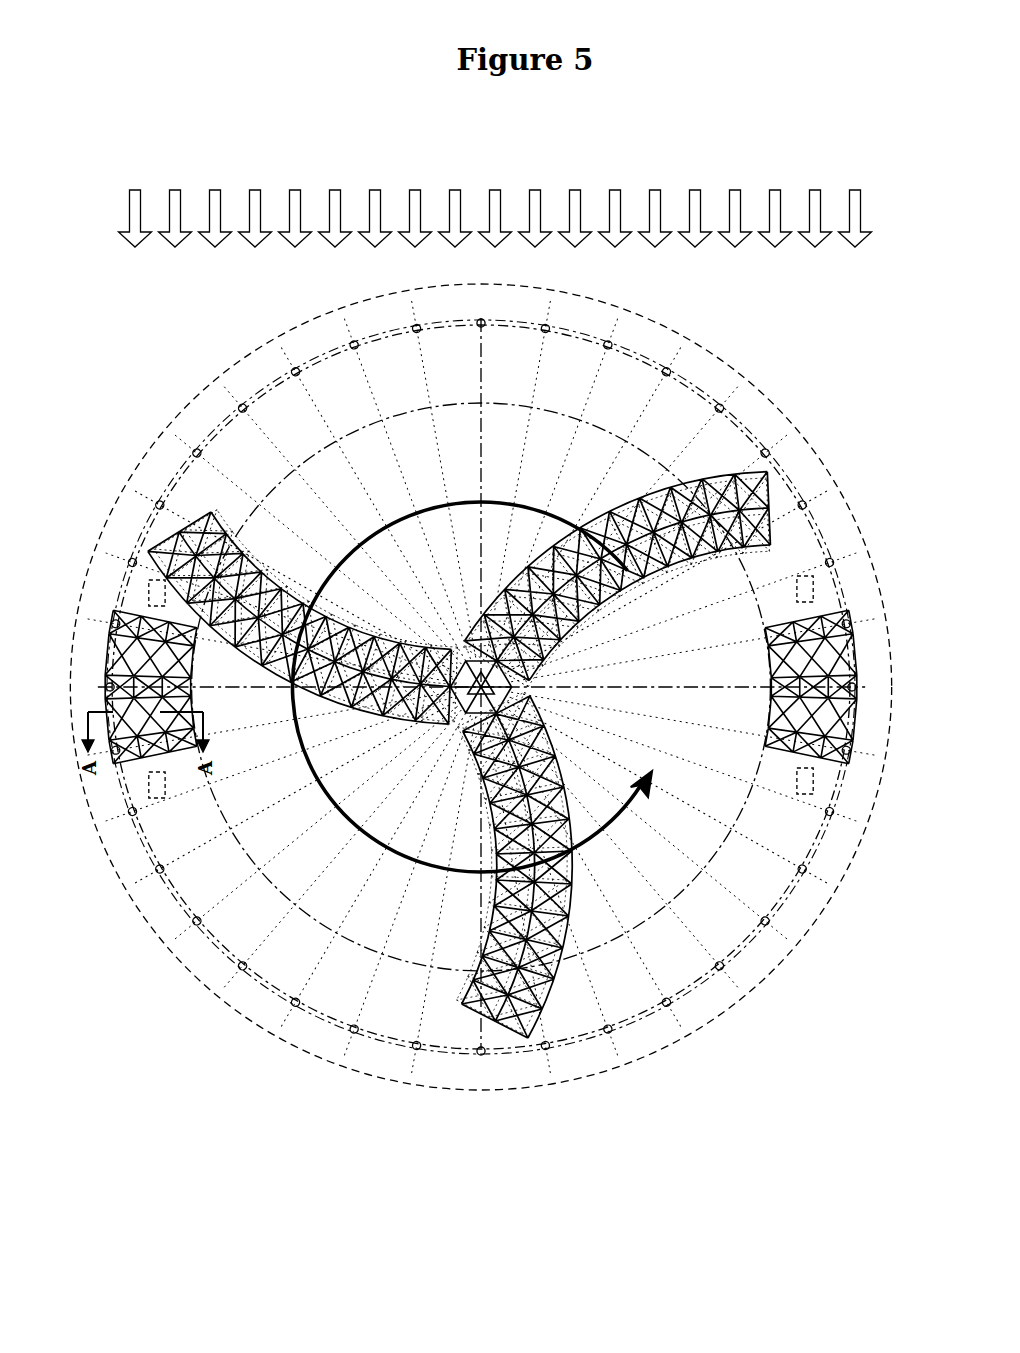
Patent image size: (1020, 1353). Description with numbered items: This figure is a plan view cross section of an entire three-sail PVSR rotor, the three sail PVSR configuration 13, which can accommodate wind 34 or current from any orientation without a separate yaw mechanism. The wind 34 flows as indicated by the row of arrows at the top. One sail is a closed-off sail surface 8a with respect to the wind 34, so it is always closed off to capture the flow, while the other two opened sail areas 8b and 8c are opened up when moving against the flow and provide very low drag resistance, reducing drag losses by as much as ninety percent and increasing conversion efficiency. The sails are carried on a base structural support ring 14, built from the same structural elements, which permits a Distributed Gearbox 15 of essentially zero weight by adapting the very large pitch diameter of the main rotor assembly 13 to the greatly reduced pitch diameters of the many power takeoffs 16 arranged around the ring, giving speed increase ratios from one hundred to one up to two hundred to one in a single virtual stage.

The closed-off sail surface 8a is at (177, 527).
The opened sail area 8b is at (494, 1020).
The opened sail area 8c is at (770, 507).
The three sail PVSR configuration 13 is at (636, 1056).
The base structural support ring 14 is at (667, 955).
The Distributed Gearbox 15 is at (265, 983).
The power takeoffs 16 is at (549, 1050).
The wind 34 is at (133, 235).